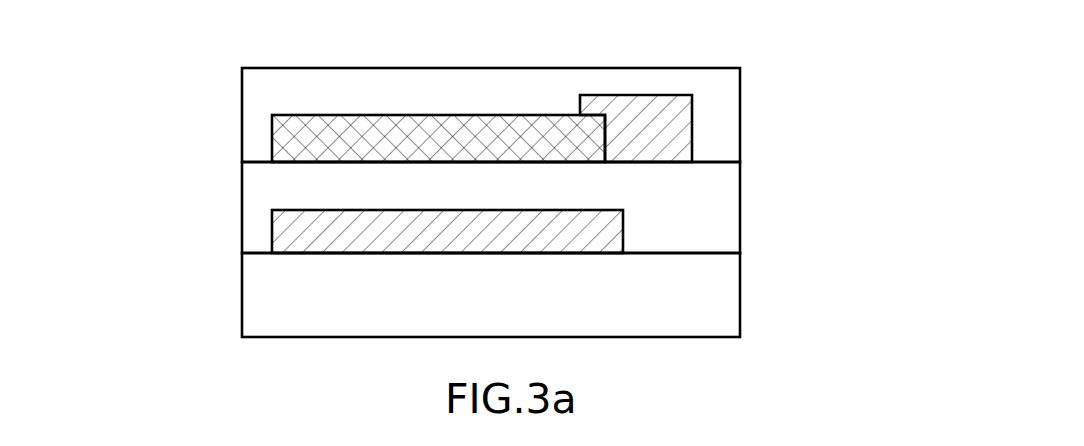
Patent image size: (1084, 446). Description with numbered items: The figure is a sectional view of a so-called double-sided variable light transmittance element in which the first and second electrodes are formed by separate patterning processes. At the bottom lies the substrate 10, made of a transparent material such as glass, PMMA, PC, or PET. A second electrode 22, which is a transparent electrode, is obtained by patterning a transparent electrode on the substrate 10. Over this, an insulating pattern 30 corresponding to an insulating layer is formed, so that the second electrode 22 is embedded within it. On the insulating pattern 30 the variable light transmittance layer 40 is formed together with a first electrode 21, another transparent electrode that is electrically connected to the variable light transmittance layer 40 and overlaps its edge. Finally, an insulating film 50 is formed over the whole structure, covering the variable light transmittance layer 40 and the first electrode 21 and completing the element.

The substrate 10 is at (707, 295).
The insulating pattern 30 is at (707, 220).
The insulating film 50 is at (713, 103).
The second electrode 22 is at (302, 233).
The first electrode 21 is at (663, 133).
The variable light transmittance layer 40 is at (302, 140).